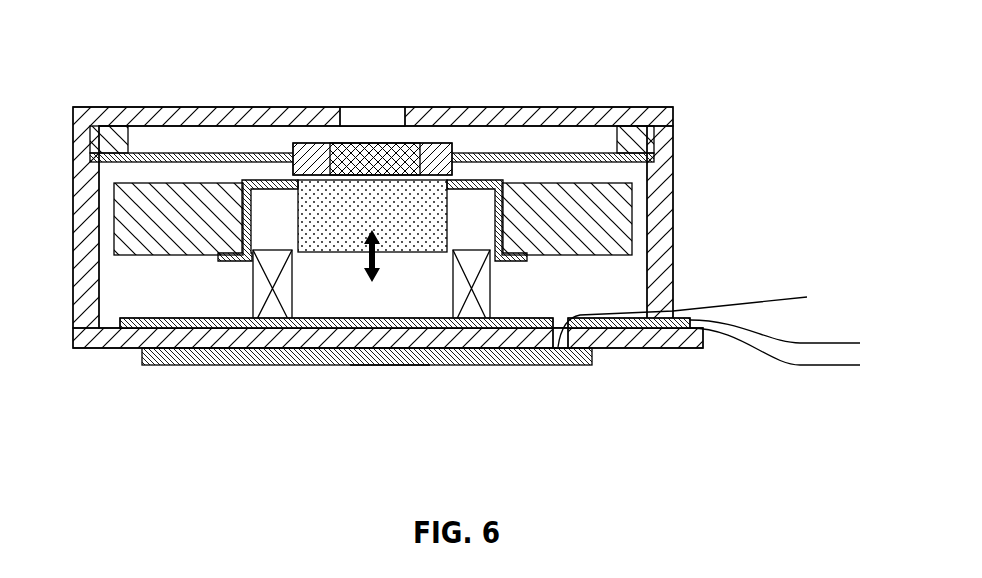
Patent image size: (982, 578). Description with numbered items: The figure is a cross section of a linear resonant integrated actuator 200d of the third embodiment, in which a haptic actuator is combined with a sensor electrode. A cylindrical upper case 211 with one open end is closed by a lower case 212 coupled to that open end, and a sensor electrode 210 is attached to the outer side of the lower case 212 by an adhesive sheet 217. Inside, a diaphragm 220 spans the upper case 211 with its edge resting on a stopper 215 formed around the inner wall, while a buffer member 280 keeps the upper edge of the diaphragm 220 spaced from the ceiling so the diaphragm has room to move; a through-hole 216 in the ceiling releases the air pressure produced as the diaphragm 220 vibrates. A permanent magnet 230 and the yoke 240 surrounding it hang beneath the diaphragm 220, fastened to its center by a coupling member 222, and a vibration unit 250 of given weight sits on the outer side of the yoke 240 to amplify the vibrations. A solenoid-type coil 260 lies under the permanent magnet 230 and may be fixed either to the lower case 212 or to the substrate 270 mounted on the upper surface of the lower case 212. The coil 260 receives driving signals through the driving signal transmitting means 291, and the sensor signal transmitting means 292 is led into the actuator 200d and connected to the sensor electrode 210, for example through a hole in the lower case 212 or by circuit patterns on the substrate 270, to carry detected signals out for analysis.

The linear resonant integrated actuator 200d is at (118, 32).
The sensor electrode 210 is at (338, 365).
The upper case 211 is at (436, 172).
The lower case 212 is at (103, 348).
The stopper 215 is at (657, 163).
The through-hole 216 is at (377, 103).
The adhesive sheet 217 is at (390, 365).
The diaphragm 220 is at (562, 155).
The coupling member 222 is at (337, 147).
The permanent magnet 230 is at (420, 247).
The yoke 240 is at (495, 180).
The vibration unit 250 is at (160, 256).
The coil 260 is at (272, 320).
The substrate 270 is at (613, 347).
The buffer member 280 is at (640, 108).
The driving signal transmitting means 291 is at (820, 340).
The sensor signal transmitting means 292 is at (780, 297).